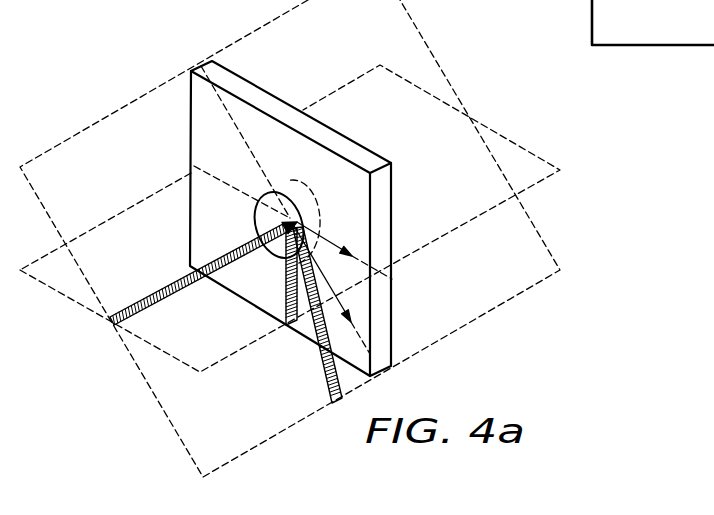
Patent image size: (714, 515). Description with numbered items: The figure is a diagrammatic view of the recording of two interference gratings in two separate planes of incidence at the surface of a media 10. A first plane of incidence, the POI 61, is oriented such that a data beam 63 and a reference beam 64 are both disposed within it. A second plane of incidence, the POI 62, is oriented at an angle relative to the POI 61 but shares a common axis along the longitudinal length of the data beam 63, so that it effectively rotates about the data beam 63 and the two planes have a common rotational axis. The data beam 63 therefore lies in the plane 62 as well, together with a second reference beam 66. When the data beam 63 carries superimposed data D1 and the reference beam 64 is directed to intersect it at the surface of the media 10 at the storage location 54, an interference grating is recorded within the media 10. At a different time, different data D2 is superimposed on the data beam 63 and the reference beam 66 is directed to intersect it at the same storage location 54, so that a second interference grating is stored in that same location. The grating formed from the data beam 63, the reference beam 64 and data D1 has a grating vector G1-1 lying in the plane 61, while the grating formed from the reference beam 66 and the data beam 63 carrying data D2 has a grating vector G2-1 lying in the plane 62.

The media 10 is at (340, 143).
The storage location 54 is at (288, 187).
The plane of incidence 61 is at (42, 267).
The plane of incidence 62 is at (245, 445).
The data beam 63 is at (90, 340).
The reference beam 64 is at (287, 274).
The reference beam 66 is at (323, 372).
The grating vector G1-1 is at (338, 227).
The grating vector G2-1 is at (330, 287).